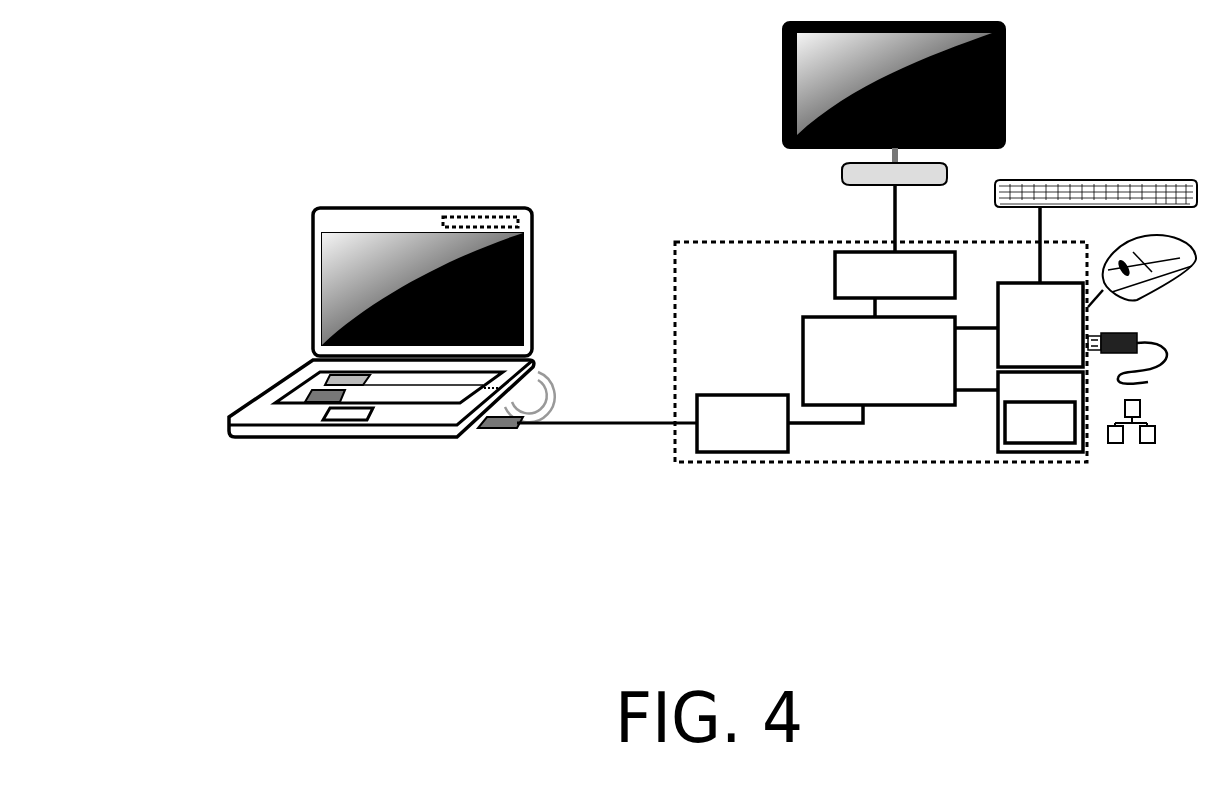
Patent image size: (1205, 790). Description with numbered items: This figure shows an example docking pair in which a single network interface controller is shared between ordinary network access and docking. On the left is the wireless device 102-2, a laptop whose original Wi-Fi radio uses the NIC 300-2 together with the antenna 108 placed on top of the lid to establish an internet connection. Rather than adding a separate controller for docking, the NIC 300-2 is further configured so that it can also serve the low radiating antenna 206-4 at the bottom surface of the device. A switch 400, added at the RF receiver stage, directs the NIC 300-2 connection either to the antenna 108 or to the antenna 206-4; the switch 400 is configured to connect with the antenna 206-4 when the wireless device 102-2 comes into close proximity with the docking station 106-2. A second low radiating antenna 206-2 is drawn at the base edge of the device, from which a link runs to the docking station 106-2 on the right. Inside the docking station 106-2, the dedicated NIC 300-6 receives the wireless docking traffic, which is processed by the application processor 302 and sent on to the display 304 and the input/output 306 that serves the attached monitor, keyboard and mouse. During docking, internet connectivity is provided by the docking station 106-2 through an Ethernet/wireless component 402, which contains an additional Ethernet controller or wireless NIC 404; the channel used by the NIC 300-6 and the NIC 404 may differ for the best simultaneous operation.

The wireless device 102-2 is at (313, 267).
The antenna 108 is at (527, 213).
The switch 400 is at (325, 376).
The NIC 300-2 is at (317, 408).
The antenna 206-4 is at (541, 364).
The low radiating antenna 206-2 is at (514, 429).
The docking station 106-2 is at (806, 236).
The display 304 is at (878, 285).
The application processor 302 is at (862, 370).
The input/output (I/O) 306 is at (1022, 335).
The Ethernet/wireless component 402 is at (1030, 398).
The Ethernet controller/wireless NIC 404 is at (1022, 435).
The NIC 300-6 is at (742, 423).